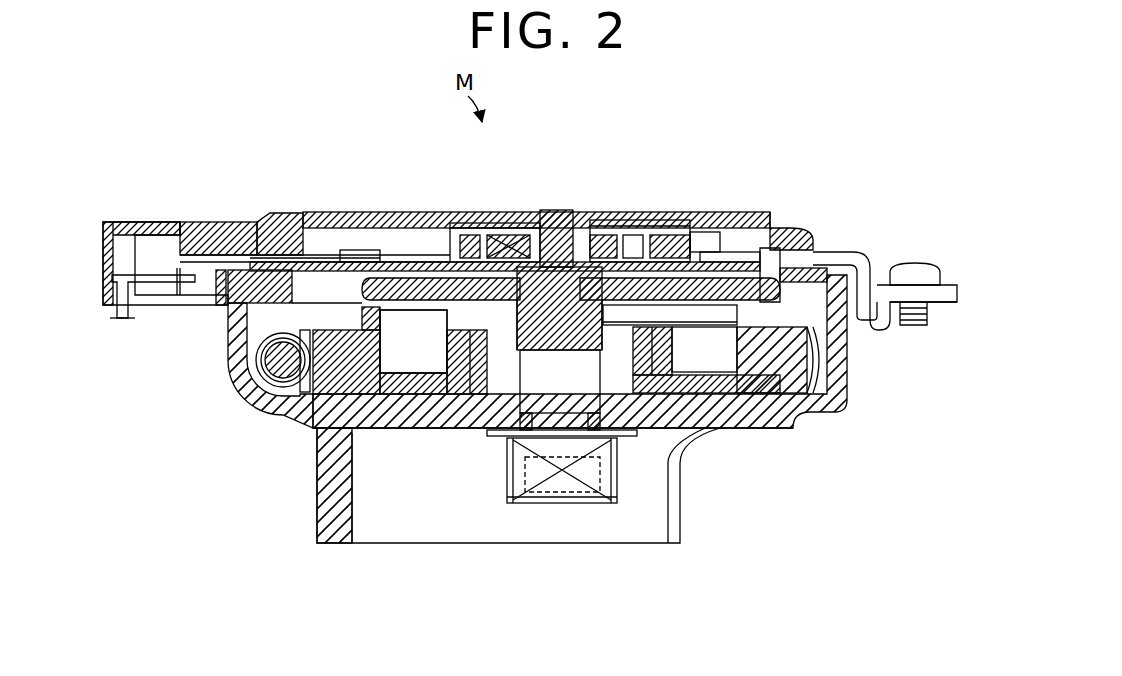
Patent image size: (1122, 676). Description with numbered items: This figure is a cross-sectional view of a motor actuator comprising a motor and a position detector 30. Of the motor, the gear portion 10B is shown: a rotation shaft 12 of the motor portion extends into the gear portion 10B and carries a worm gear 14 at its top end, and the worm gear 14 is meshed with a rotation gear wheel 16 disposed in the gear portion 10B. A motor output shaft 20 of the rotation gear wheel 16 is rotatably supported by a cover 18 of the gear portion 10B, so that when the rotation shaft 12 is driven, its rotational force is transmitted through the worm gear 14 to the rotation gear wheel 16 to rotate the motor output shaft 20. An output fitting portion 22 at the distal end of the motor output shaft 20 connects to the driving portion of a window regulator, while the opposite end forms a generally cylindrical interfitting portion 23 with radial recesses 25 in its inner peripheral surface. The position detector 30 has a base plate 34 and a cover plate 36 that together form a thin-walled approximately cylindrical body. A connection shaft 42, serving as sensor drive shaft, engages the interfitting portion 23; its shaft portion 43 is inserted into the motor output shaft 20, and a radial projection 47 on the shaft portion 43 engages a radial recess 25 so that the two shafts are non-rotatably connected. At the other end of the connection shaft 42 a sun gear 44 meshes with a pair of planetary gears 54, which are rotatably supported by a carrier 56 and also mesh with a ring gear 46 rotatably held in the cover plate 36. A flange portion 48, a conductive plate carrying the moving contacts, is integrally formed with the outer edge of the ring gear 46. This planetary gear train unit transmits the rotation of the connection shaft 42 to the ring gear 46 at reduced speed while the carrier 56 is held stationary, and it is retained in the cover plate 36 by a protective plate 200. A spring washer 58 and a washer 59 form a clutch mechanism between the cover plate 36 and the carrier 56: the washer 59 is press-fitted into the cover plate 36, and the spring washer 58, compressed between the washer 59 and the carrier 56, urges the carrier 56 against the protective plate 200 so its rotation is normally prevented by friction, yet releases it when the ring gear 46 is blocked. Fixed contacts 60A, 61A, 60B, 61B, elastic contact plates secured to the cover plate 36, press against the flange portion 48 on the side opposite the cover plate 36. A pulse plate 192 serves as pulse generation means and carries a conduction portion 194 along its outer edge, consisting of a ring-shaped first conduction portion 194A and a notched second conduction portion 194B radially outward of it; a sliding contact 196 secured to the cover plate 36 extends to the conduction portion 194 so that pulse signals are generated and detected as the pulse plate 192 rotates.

The gear portion 10B is at (292, 436).
The rotation shaft 12 is at (262, 362).
The worm gear 14 is at (240, 388).
The rotation gear wheel 16 is at (815, 358).
The cover 18 is at (738, 430).
The motor output shaft 20 is at (657, 440).
The output fitting portion 22 is at (583, 504).
The interfitting portion 23 is at (522, 318).
The radial recesses 25 is at (576, 330).
The position detector 30 is at (612, 140).
The base plate 34 is at (250, 283).
The cover plate 36 is at (303, 216).
The connection shaft 42 is at (546, 209).
The shaft portion 43 is at (603, 400).
The sun gear 44 is at (590, 210).
The ring gear 46 is at (660, 212).
The radial projection 47 is at (544, 333).
The flange portion 48 is at (473, 208).
The planetary gears 54 is at (480, 219).
The carrier 56 is at (493, 208).
The spring washer 58 is at (632, 212).
The washer 59 is at (610, 212).
The fixed contact 60A is at (378, 212).
The fixed contact 60B is at (670, 340).
The fixed contact 61A is at (392, 246).
The fixed contact 61B is at (706, 384).
The pulse plate 192 is at (695, 212).
The conduction portion 194 is at (448, 212).
The first conduction portion 194A is at (350, 219).
The second conduction portion 194B is at (764, 212).
The sliding contact 196 is at (352, 212).
The protective plate 200 is at (718, 212).